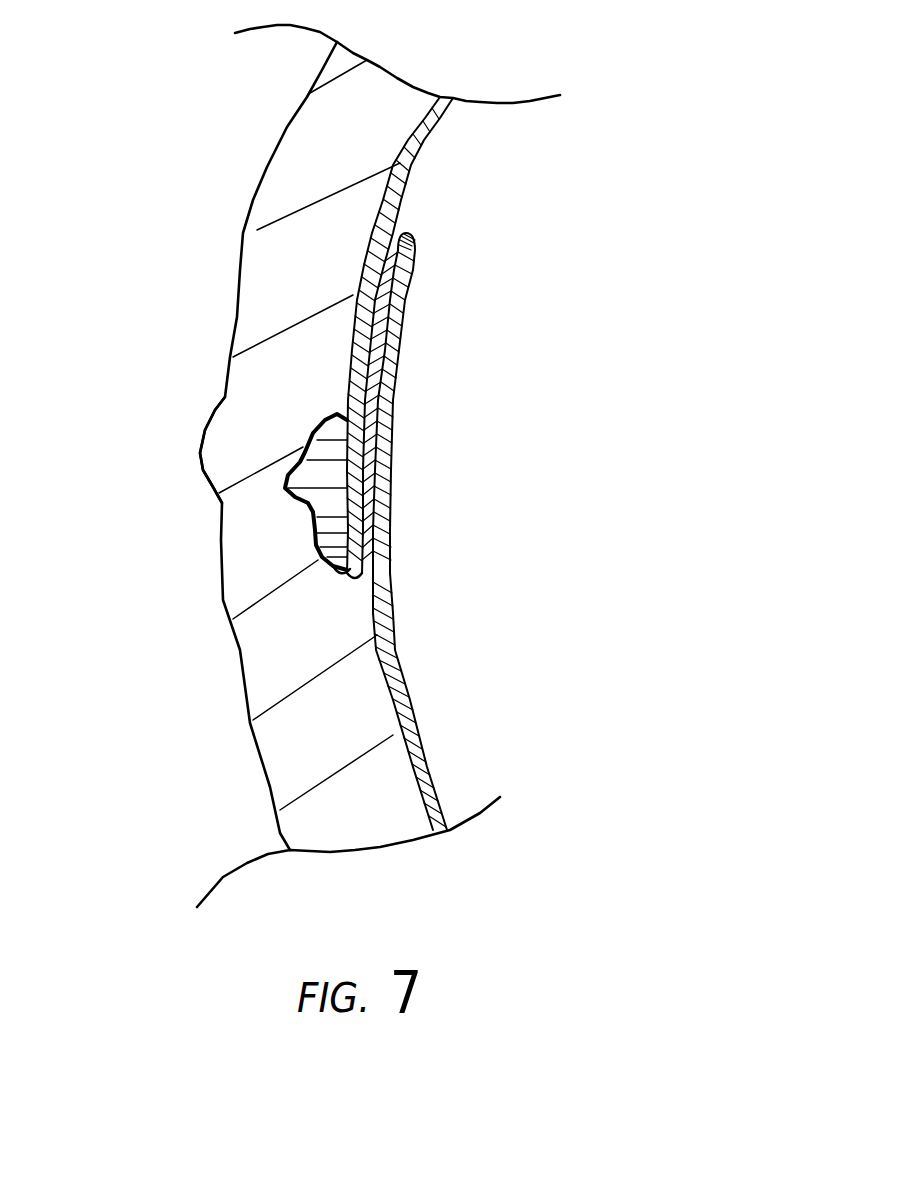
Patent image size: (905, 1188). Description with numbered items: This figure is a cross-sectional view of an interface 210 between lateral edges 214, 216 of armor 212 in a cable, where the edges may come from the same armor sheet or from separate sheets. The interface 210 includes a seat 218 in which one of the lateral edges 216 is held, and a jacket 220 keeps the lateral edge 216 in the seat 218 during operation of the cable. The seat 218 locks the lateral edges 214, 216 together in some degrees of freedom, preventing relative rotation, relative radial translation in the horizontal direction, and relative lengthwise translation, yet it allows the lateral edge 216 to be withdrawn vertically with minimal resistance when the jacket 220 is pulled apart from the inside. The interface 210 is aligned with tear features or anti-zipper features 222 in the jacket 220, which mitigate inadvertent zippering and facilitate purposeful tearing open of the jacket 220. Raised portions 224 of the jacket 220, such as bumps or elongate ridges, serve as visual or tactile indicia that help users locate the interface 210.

The interface 210 is at (122, 307).
The armor 212 is at (386, 634).
The lateral edge 214 is at (342, 488).
The lateral edge 216 is at (355, 548).
The seat 218 is at (358, 565).
The jacket 220 is at (337, 268).
The tear features and/or anti-zipper features 222 is at (313, 497).
The raised portions 224 is at (213, 452).